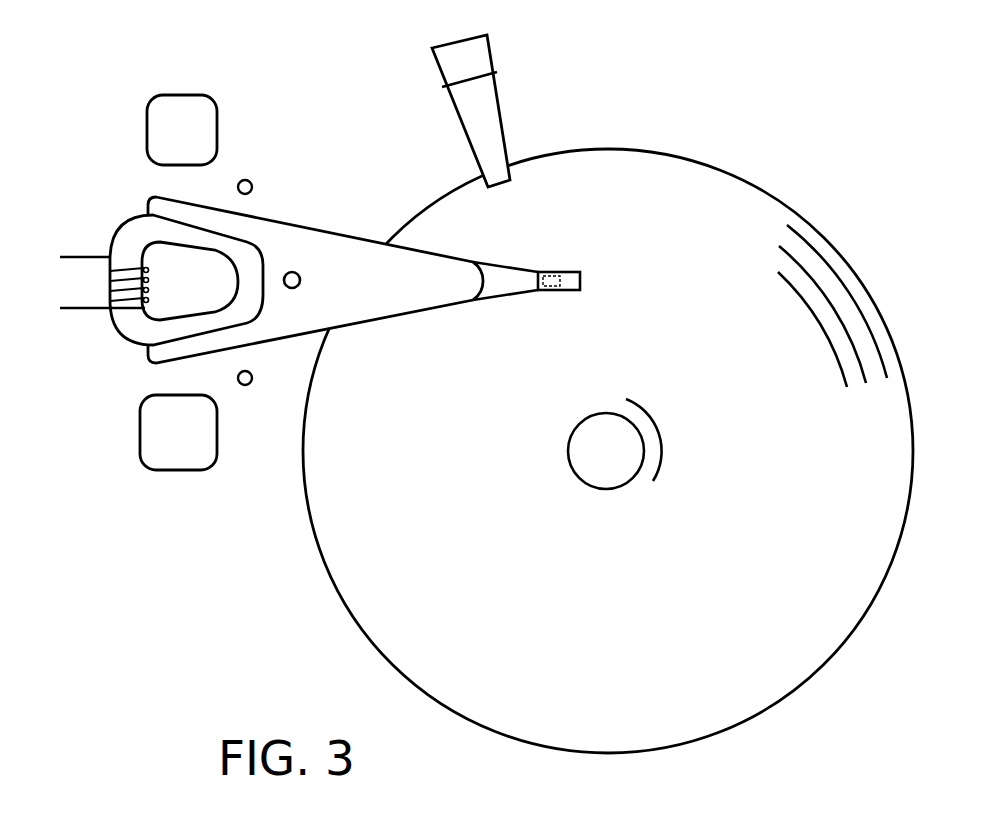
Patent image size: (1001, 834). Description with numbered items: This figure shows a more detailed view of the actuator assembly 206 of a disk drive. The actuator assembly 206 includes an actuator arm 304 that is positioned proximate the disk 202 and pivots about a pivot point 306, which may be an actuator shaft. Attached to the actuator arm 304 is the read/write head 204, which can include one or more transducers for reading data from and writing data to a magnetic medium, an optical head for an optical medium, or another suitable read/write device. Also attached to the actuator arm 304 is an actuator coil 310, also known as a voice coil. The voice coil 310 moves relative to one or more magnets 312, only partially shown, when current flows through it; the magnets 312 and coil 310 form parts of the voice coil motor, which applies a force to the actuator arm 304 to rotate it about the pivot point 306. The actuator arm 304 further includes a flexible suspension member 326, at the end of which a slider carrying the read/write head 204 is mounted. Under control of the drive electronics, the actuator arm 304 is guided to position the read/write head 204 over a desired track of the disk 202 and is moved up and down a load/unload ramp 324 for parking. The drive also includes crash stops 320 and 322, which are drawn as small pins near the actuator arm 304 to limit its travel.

The disk 202 is at (712, 150).
The read/write head 204 is at (553, 272).
The actuator assembly 206 is at (329, 223).
The actuator arm 304 is at (400, 296).
The pivot point 306 is at (292, 272).
The actuator coil 310 is at (117, 237).
The magnets 312 is at (147, 112).
The crash stop 320 is at (250, 383).
The crash stop 322 is at (253, 180).
The load/unload ramp 324 is at (505, 148).
The flexible suspension member 326 is at (497, 298).